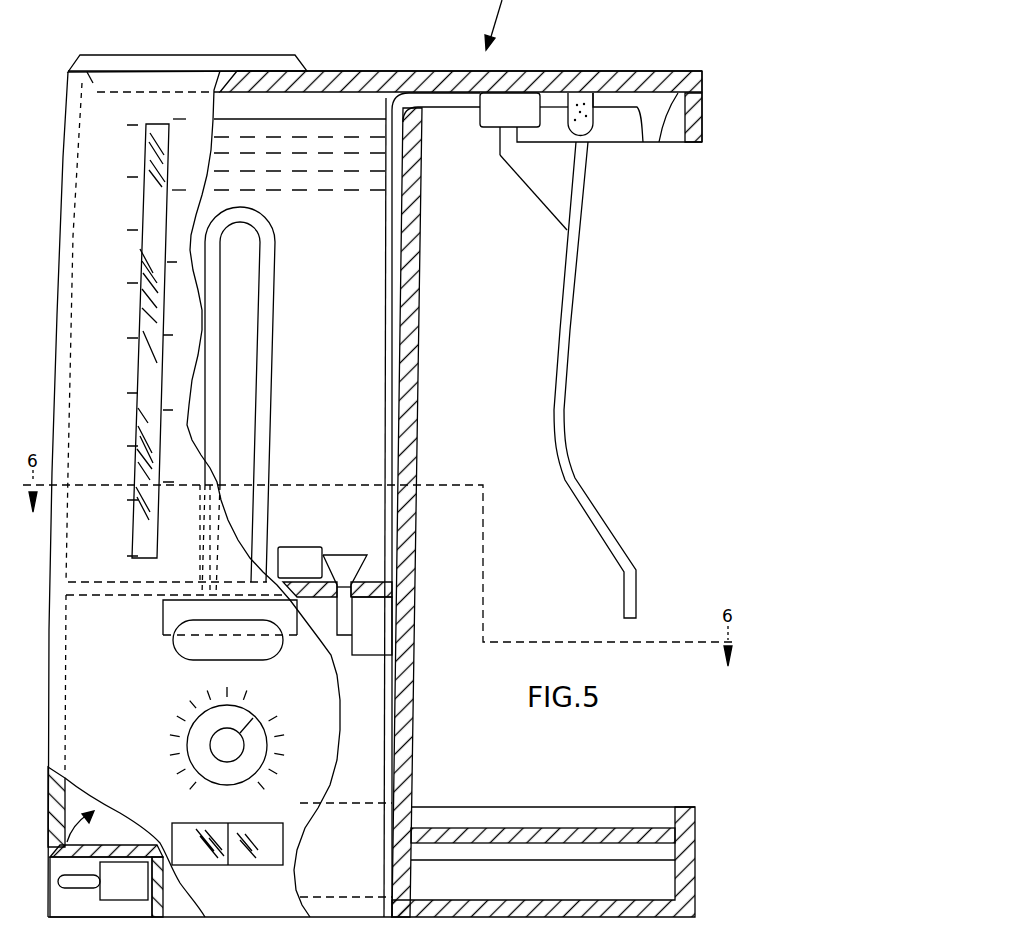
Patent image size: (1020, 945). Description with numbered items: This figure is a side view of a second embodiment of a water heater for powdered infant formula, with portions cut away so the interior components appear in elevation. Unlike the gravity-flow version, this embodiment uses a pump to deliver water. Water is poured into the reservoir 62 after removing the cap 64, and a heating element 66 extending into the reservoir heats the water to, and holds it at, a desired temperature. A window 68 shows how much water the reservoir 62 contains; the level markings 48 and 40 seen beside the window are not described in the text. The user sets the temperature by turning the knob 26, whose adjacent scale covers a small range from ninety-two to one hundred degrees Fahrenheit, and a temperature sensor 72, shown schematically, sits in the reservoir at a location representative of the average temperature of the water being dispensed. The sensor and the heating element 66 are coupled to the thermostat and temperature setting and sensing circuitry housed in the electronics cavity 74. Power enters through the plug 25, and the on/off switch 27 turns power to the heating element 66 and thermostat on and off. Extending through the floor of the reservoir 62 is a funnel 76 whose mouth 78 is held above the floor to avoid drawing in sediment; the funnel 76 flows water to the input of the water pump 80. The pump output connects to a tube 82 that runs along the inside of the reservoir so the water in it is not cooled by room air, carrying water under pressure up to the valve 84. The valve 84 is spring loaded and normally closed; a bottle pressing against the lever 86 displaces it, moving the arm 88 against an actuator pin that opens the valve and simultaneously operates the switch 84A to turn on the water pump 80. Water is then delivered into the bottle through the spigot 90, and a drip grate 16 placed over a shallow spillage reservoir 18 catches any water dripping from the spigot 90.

The drip grate 16 is at (657, 814).
The spillage reservoir 18 is at (655, 907).
The plug 25 is at (112, 918).
The knob 26 is at (170, 655).
The on/off switch 27 is at (197, 868).
The reservoir level marking 40 is at (189, 191).
The reservoir level marking 48 is at (190, 118).
The reservoir 62 is at (334, 125).
The cap 64 is at (190, 54).
The heating element 66 is at (264, 324).
The window 68 is at (158, 123).
The temperature sensor 72 is at (320, 546).
The electronics cavity 74 is at (62, 865).
The funnel 76 is at (365, 574).
The mouth 78 is at (350, 543).
The water pump 80 is at (394, 640).
The tube 82 is at (388, 423).
The valve 84 is at (534, 93).
The switch 84A is at (483, 133).
The lever 86 is at (563, 401).
The arm 88 is at (541, 185).
The spigot 90 is at (633, 144).